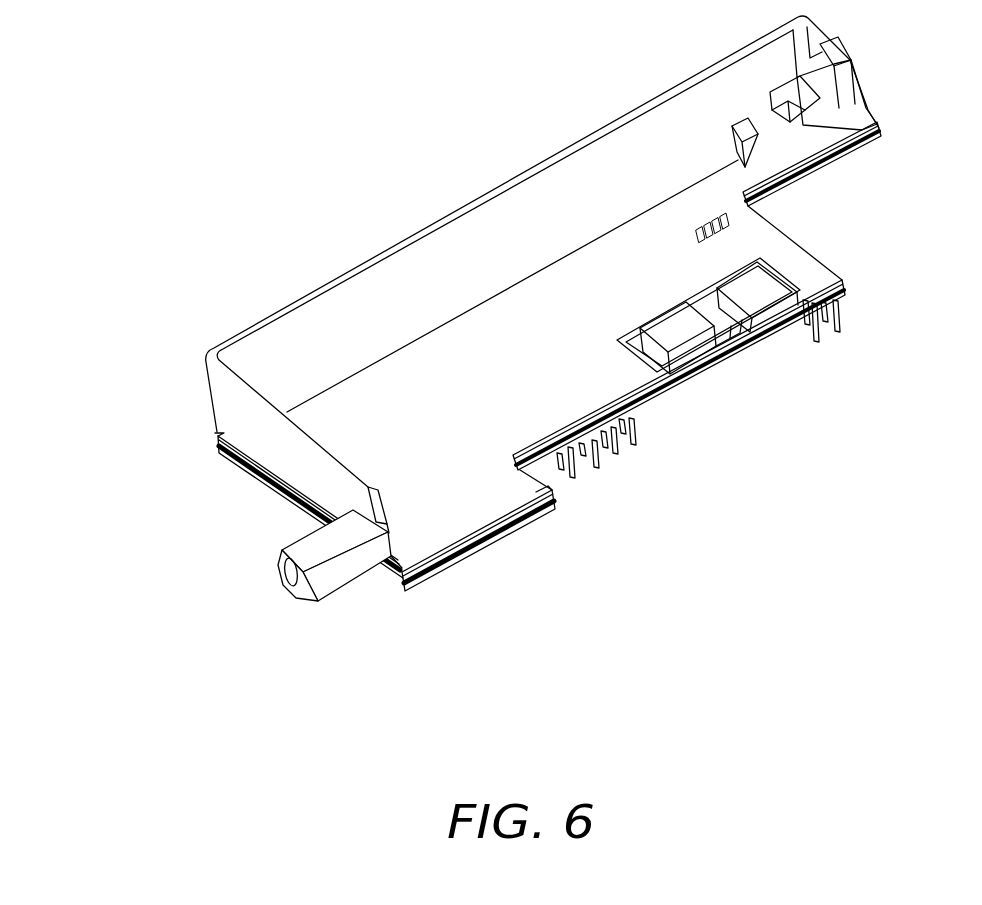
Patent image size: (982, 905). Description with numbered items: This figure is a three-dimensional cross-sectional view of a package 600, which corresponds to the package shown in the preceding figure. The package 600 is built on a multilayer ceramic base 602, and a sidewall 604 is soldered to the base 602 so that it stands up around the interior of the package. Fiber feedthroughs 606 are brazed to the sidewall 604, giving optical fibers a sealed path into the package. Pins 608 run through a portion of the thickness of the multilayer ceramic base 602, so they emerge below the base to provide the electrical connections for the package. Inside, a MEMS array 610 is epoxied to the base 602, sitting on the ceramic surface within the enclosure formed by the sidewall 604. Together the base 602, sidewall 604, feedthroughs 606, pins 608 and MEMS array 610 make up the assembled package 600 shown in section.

The package 600 is at (275, 62).
The multilayer ceramic base 602 is at (477, 545).
The sidewall 604 is at (492, 277).
The fiber feedthroughs 606 is at (287, 570).
The pins 608 is at (613, 448).
The MEMS array 610 is at (742, 293).